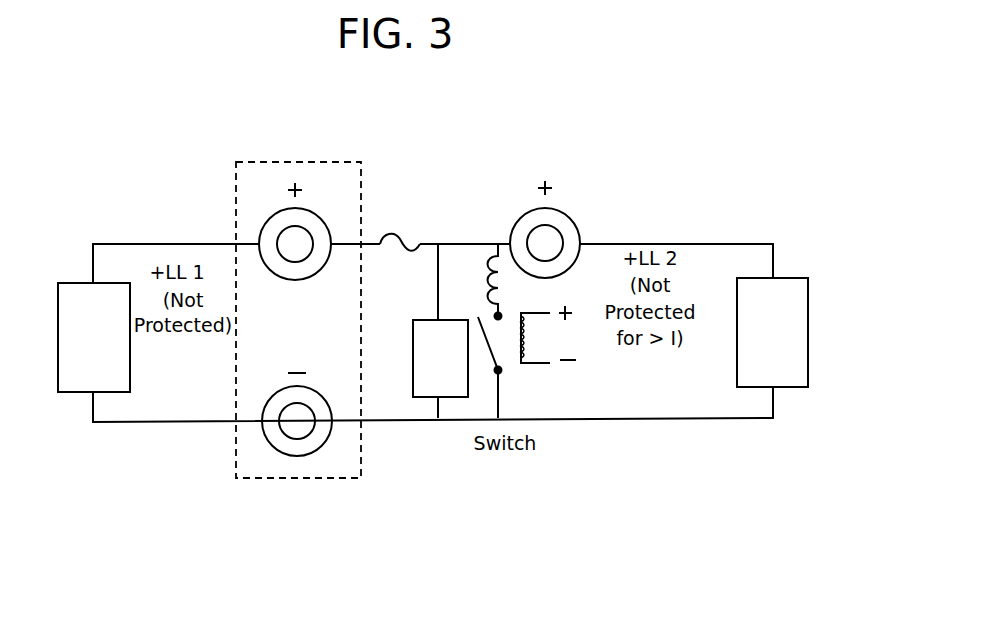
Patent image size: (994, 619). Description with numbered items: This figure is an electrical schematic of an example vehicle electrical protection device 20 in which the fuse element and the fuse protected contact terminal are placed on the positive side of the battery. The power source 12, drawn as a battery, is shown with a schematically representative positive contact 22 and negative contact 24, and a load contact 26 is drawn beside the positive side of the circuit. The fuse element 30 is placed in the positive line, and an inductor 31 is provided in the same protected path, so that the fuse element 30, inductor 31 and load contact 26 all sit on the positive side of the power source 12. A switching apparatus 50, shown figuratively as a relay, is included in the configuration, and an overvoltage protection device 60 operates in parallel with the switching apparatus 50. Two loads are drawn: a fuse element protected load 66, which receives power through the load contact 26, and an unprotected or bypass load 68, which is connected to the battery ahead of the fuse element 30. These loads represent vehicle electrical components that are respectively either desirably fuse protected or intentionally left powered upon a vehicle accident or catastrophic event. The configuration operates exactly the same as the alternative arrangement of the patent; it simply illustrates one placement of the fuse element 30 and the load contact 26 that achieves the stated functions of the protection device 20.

The power source 12 is at (236, 162).
The protection device 20 is at (462, 178).
The positive contact 22 is at (317, 217).
The negative contact 24 is at (323, 445).
The load contact 26 is at (571, 219).
The fuse element 30 is at (394, 236).
The inductor 31 is at (488, 248).
The switching apparatus 50 is at (542, 365).
The overvoltage protection device 60 is at (432, 398).
The fuse element protected load 66 is at (808, 298).
The bypass load 68 is at (83, 283).